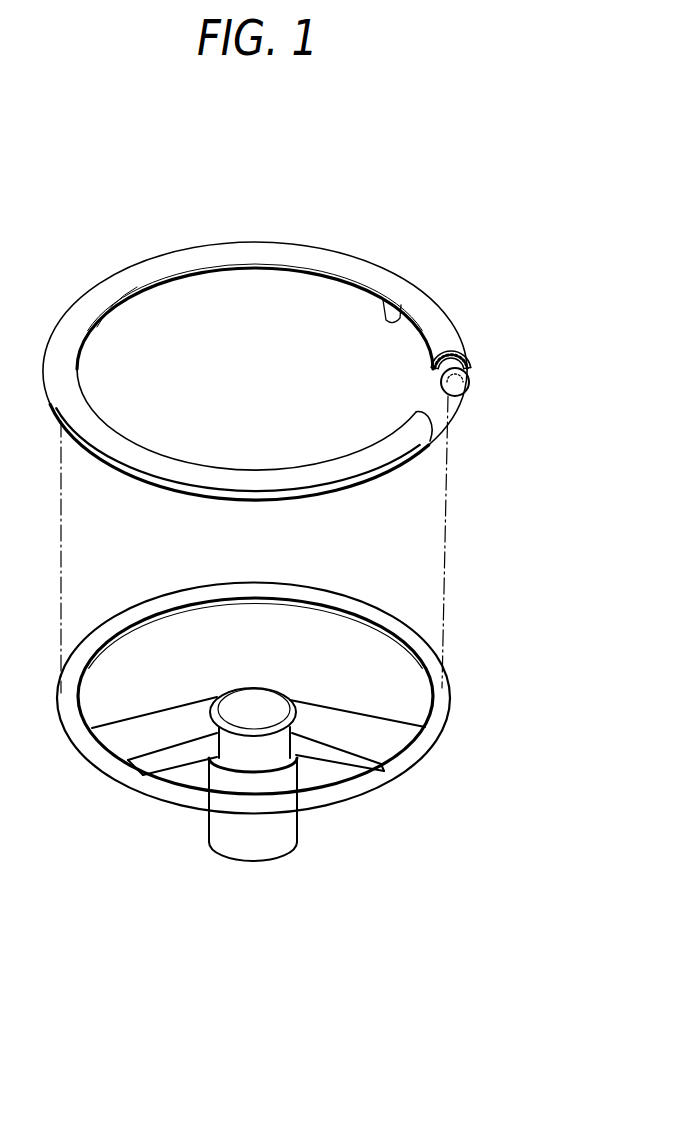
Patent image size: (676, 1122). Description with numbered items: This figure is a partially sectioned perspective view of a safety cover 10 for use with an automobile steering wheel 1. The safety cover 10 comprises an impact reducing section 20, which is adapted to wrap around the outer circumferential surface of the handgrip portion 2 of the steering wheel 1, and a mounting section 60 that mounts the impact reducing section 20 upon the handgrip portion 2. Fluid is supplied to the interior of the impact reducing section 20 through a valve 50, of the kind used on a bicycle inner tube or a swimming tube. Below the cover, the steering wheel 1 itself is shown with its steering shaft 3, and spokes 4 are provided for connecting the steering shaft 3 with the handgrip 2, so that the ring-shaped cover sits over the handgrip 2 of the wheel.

The safety cover 10 is at (367, 257).
The valve 50 is at (385, 300).
The impact reducing section 20 is at (452, 348).
The mounting section 60 is at (469, 387).
The steering wheel 1 is at (352, 594).
The handgrip portion 2 is at (420, 648).
The spokes 4 is at (352, 727).
The steering shaft 3 is at (271, 837).